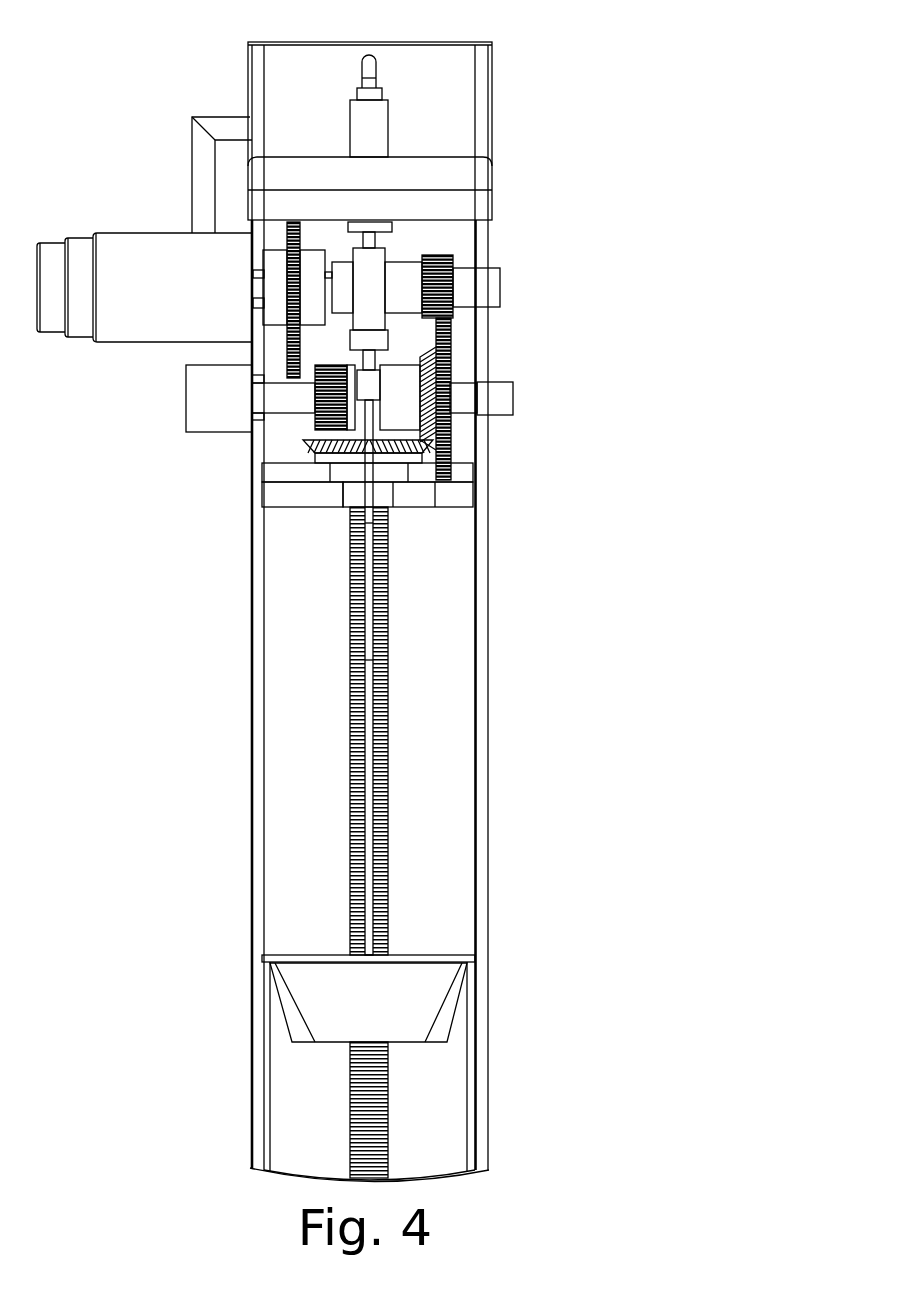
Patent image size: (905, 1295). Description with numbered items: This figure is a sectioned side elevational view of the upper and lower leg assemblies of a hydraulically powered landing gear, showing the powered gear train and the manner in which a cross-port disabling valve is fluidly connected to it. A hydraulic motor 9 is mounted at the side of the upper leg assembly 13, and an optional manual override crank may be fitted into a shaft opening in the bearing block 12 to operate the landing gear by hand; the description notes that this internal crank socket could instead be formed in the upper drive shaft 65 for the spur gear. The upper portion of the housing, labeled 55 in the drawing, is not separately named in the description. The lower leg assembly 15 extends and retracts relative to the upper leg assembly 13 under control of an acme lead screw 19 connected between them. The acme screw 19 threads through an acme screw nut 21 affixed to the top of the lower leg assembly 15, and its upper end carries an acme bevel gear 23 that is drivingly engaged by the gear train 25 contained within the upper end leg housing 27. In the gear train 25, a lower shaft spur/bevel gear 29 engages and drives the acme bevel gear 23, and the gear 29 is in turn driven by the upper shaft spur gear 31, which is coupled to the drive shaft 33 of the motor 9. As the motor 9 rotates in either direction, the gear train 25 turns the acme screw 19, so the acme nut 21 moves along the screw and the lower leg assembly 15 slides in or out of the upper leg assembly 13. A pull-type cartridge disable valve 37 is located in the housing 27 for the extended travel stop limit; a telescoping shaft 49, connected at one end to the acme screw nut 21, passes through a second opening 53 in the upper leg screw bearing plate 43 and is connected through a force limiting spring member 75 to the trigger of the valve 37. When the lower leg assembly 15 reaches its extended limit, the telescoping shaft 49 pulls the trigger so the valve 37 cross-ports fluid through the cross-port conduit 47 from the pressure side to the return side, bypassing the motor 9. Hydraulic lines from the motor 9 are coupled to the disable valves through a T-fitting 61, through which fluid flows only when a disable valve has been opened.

The hydraulic motor 9 is at (135, 247).
The bearing block 12 is at (195, 398).
The upper leg assembly 13 is at (487, 723).
The lower leg assembly 15 is at (473, 983).
The acme lead screw 19 is at (373, 1178).
The acme screw nut 21 is at (408, 983).
The acme bevel gear 23 is at (325, 458).
The gear train 25 is at (502, 398).
The upper end leg housing 27 is at (487, 482).
The lower shaft spur/bevel gear 29 is at (450, 425).
The upper shaft spur gear 31 is at (453, 268).
The drive shaft 33 is at (328, 280).
The disable valve 37 is at (370, 118).
The upper leg screw bearing plate 43 is at (458, 493).
The cross-port conduit 47 is at (367, 62).
The telescoping shaft 49 is at (323, 428).
The second opening 53 is at (305, 490).
The upper housing 55 is at (492, 48).
The T-fitting 61 is at (203, 138).
The upper drive shaft 65 is at (473, 287).
The force limiting spring member 75 is at (378, 272).